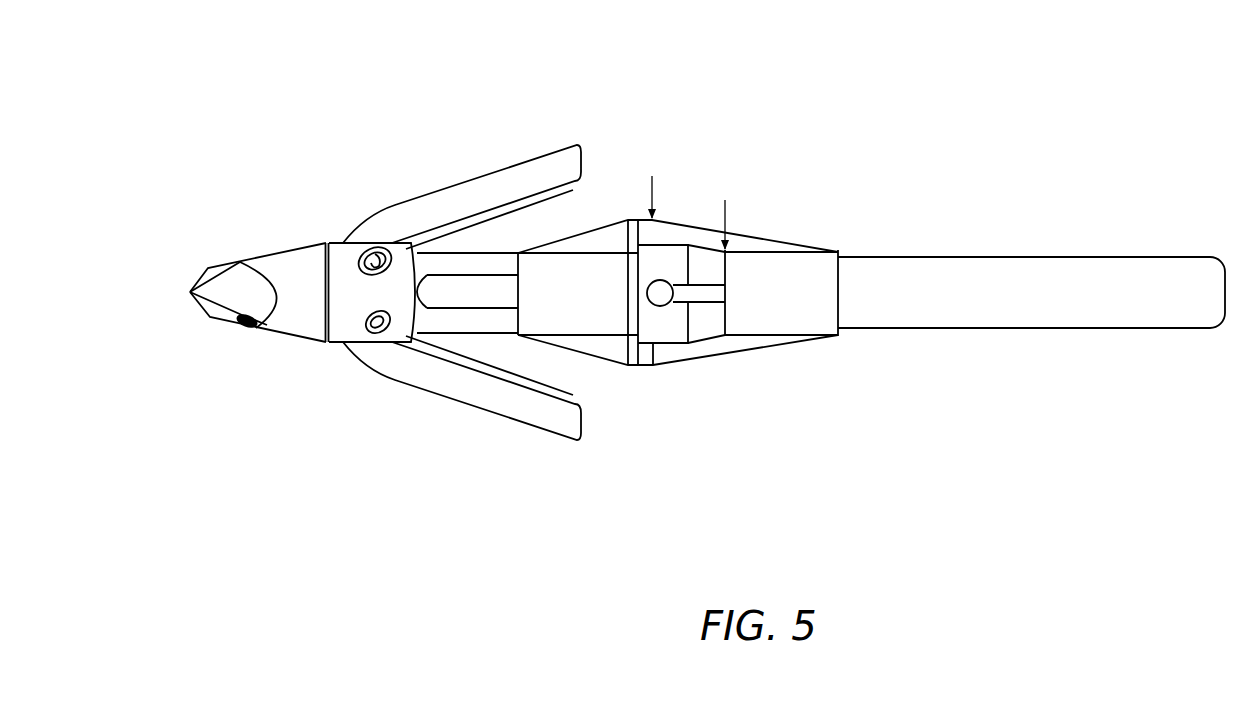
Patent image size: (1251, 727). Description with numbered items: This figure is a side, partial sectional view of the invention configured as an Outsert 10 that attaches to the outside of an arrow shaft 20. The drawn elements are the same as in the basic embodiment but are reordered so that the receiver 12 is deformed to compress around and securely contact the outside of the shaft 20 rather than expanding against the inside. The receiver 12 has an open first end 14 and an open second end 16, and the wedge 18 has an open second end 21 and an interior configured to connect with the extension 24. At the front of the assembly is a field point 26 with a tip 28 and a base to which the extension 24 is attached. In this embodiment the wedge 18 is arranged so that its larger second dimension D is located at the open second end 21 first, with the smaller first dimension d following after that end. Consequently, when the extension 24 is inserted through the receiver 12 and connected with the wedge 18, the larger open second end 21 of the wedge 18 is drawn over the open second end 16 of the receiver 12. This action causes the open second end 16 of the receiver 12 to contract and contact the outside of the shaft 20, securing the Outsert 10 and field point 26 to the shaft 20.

The broadhead assembly 10 is at (929, 76).
The receiver 12 is at (610, 364).
The open first end 14 is at (515, 250).
The open second end 16 is at (742, 274).
The wedge 18 is at (785, 345).
The arrow shaft 20 is at (838, 268).
The open second end 21 is at (630, 318).
The extension 24 is at (559, 292).
The field point 26 is at (297, 265).
The tip 28 is at (188, 290).